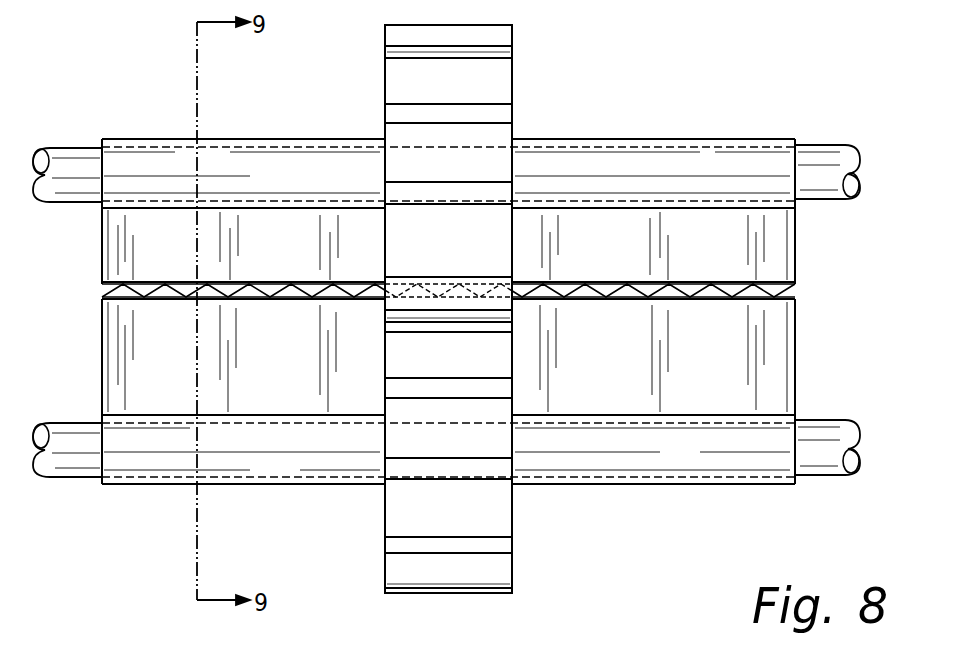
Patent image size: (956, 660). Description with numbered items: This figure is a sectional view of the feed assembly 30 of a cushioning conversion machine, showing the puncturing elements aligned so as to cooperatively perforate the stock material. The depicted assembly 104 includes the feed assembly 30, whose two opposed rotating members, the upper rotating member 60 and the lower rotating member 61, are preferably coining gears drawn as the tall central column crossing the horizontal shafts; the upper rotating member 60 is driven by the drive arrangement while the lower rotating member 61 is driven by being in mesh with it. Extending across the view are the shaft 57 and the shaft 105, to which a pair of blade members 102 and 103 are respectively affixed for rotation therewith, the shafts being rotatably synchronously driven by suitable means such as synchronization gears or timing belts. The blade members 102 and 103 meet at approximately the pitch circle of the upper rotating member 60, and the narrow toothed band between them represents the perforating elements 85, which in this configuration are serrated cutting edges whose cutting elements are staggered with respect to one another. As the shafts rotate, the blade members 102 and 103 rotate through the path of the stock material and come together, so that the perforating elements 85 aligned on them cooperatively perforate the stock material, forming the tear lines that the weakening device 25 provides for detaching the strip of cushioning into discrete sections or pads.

The weakening device 25 is at (802, 283).
The feed assembly 30 is at (519, 604).
The shaft 57 is at (77, 160).
The upper rotating member 60 is at (397, 88).
The lower rotating member 61 is at (405, 513).
The perforating elements 85 is at (105, 290).
The blade member 102 is at (125, 252).
The blade member 103 is at (125, 358).
The assembly 104 is at (548, 122).
The shaft 105 is at (77, 479).